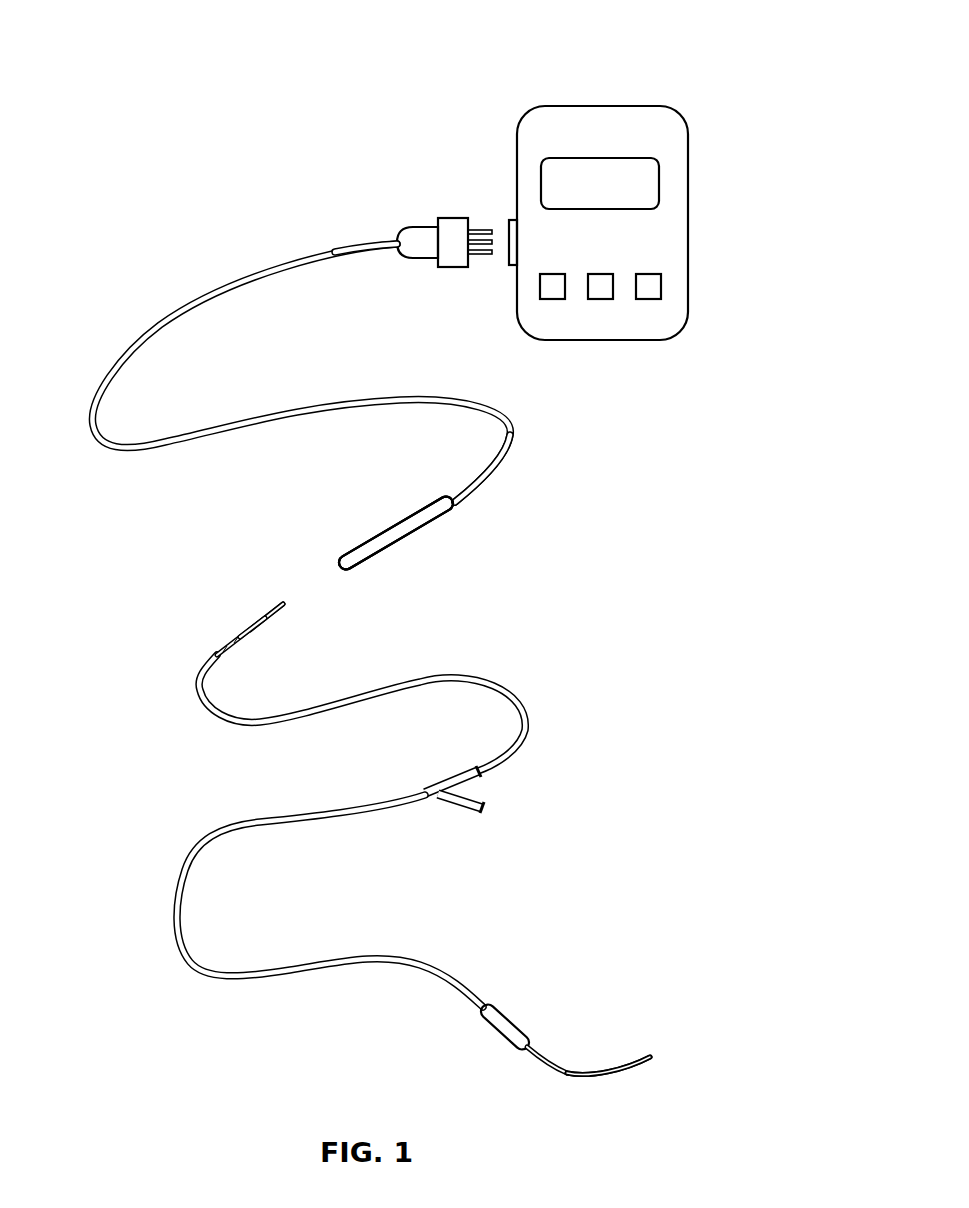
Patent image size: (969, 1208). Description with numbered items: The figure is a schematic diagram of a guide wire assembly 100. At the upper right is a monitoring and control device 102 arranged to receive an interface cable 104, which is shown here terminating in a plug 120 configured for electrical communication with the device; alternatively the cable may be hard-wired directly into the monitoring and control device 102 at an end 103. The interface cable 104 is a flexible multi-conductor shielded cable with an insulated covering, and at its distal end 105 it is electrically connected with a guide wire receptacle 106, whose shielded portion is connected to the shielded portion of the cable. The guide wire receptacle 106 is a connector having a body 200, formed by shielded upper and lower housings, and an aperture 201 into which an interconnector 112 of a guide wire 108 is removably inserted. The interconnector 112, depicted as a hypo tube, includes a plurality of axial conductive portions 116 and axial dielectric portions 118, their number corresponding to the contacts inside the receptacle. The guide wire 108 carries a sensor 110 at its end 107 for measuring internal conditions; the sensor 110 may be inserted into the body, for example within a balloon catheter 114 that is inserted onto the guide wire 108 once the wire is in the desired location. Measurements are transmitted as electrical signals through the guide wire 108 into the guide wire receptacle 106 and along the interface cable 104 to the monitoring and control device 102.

The guide wire assembly 100 is at (268, 38).
The monitoring and control device 102 is at (688, 194).
The end of interface cable 103 is at (388, 270).
The interface cable 104 is at (120, 363).
The distal end of interface cable 105 is at (478, 504).
The guide wire receptacle 106 is at (428, 527).
The plug 120 is at (424, 225).
The body 200 is at (400, 528).
The aperture 201 is at (337, 572).
The guide wire 108 is at (528, 722).
The interconnector 112 is at (215, 624).
The balloon catheter 114 is at (175, 909).
The axial conductive portions 116 is at (277, 603).
The axial dielectric portions 118 is at (268, 617).
The end of guide wire 107 is at (594, 1036).
The sensor 110 is at (628, 1066).